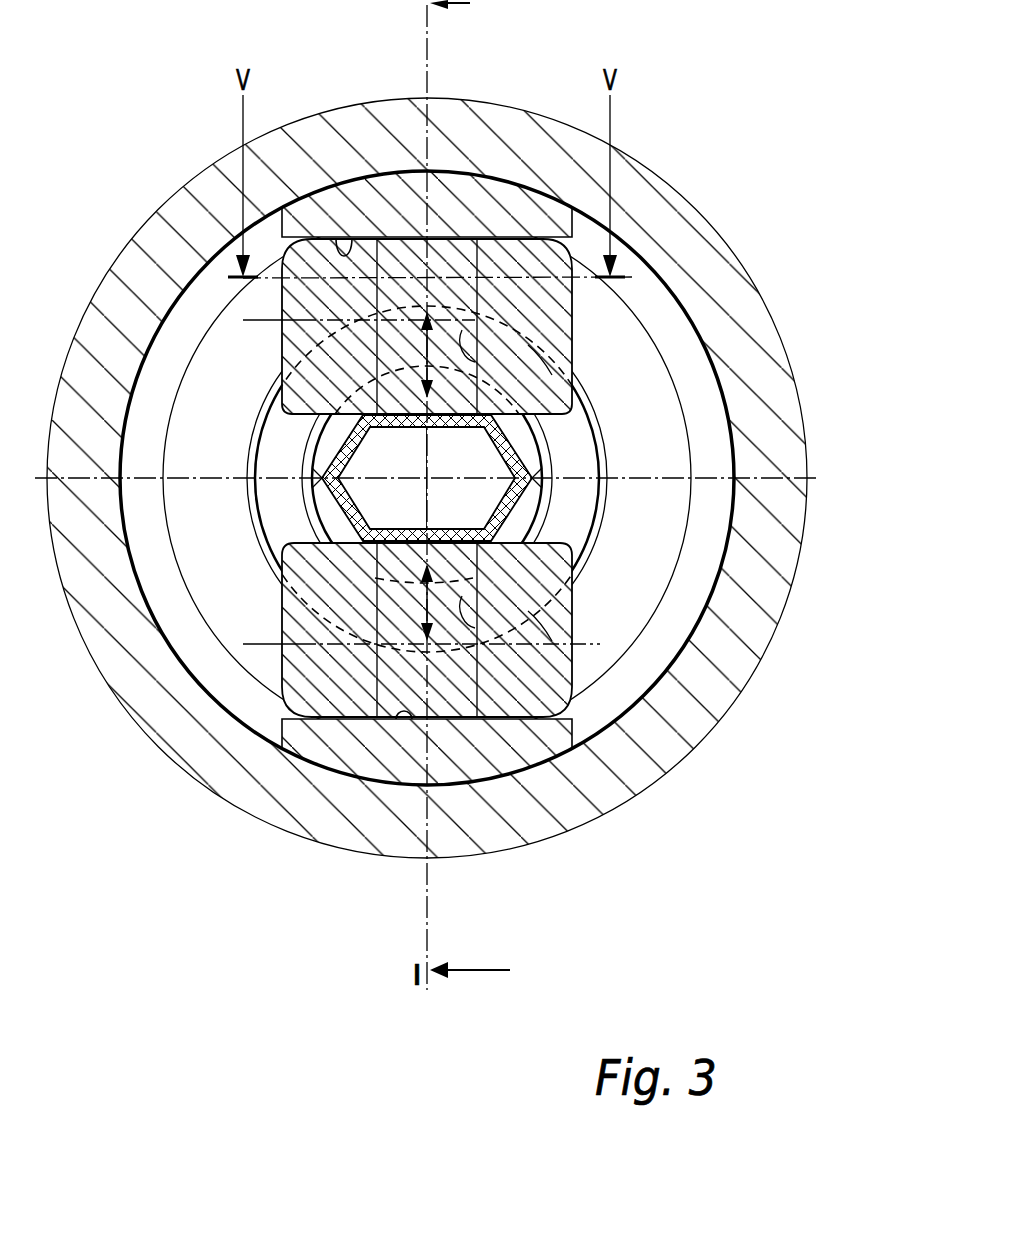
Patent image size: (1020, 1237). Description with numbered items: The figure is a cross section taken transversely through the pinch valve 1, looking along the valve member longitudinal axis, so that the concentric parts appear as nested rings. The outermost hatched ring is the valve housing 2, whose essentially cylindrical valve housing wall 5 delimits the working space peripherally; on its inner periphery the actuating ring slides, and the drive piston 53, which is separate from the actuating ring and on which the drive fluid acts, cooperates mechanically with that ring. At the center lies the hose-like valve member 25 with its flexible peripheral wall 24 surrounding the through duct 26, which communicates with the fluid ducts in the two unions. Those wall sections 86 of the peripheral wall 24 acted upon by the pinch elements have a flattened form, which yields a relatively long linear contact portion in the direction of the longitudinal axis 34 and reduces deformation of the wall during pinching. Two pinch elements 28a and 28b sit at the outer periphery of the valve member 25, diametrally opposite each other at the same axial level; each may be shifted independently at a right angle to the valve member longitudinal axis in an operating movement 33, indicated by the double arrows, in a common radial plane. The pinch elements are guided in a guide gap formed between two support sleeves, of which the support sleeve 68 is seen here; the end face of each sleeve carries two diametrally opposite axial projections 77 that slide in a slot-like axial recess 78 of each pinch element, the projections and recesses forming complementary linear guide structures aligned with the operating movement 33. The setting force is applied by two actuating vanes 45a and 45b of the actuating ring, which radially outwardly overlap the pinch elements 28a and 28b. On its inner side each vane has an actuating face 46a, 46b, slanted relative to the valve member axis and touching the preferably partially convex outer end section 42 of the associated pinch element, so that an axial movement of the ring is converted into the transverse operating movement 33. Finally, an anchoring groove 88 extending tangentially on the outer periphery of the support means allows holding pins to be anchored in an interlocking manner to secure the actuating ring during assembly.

The pinch valve 1 is at (694, 166).
The valve housing 2 is at (260, 815).
The valve housing wall 5 is at (780, 548).
The peripheral wall 24 is at (528, 518).
The valve member 25 is at (550, 450).
The through duct 26 is at (546, 451).
The pinch element 28a is at (548, 302).
The pinch element 28b is at (553, 672).
The operating movement 33 is at (428, 350).
The longitudinal axis 34 is at (262, 320).
The outer end section 42 is at (355, 238).
The actuating vane 45a is at (470, 200).
The actuating vane 45b is at (512, 750).
The actuating face 46a is at (342, 252).
The actuating face 46b is at (410, 718).
The drive piston 53 is at (705, 382).
The support sleeve 68 is at (287, 440).
The axial projection 77 is at (470, 337).
The axial recess 78 is at (482, 366).
The wall section 86 is at (392, 536).
The anchoring groove 88 is at (458, 536).